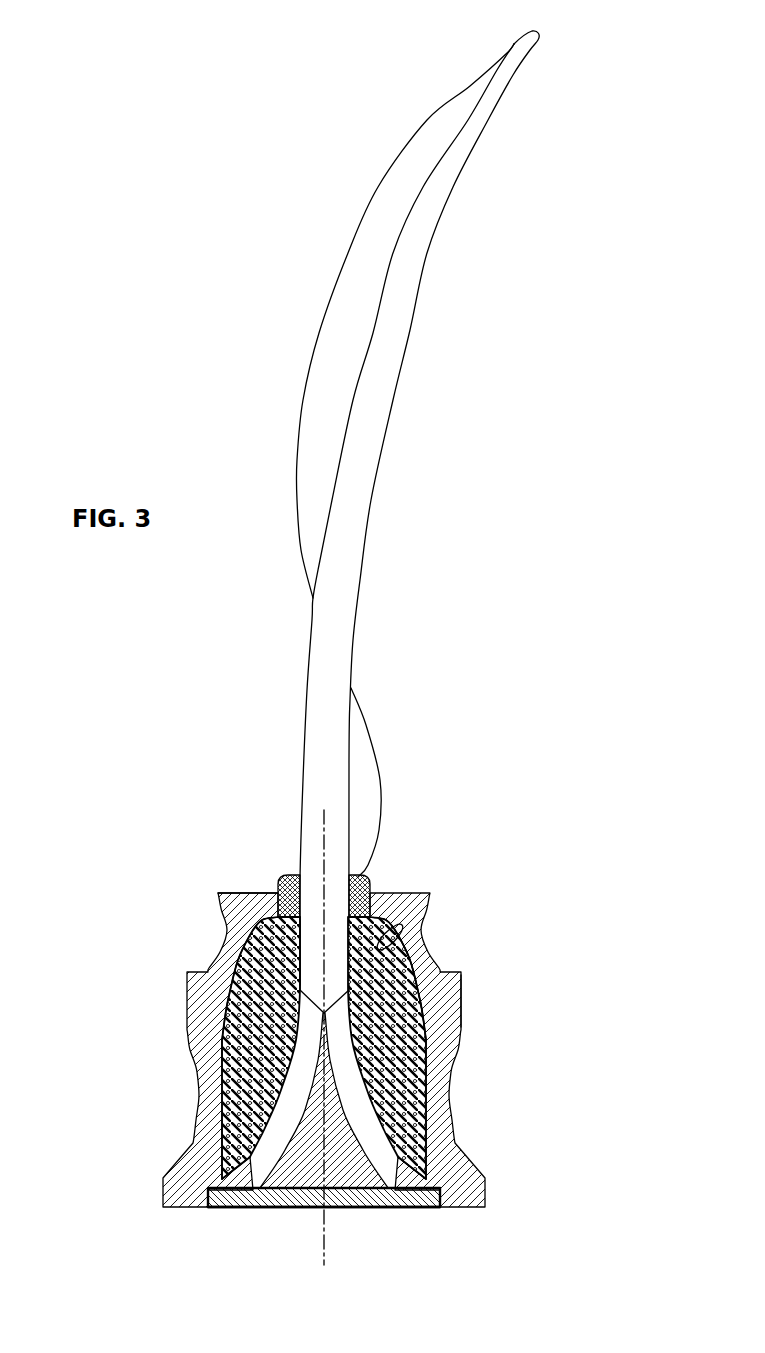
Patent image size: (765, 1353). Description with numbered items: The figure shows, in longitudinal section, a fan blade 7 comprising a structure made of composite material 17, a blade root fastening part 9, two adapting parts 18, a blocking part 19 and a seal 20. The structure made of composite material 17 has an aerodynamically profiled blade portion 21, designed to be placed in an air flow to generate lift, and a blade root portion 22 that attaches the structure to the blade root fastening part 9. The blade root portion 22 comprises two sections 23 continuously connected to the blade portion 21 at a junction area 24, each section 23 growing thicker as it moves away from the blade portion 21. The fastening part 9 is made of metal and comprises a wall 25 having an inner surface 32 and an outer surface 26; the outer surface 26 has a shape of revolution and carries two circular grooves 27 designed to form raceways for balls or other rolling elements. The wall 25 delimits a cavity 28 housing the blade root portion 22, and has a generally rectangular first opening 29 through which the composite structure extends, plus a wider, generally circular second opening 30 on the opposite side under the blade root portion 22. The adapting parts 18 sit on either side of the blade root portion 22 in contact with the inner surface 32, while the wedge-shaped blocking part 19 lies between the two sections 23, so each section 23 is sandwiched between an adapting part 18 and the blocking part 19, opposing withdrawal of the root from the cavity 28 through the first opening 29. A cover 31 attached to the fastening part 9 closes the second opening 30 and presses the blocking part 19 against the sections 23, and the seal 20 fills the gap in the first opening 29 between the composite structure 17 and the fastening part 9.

The fan blade 7 is at (192, 444).
The blade root fastening part 9 is at (327, 1029).
The structure made of composite material 17 is at (378, 510).
The adapting parts 18 is at (262, 1033).
The blocking part 19 is at (284, 1176).
The seal 20 is at (284, 878).
The aerodynamically profiled blade portion 21 is at (380, 373).
The blade root portion 22 is at (421, 987).
The sections 23 is at (250, 1160).
The junction area 24 is at (333, 958).
The wall 25 is at (451, 1003).
The outer surface 26 is at (186, 1000).
The circular grooves 27 is at (424, 932).
The cavity 28 is at (390, 930).
The first opening 29 is at (366, 882).
The second opening 30 is at (431, 1203).
The cover 31 is at (360, 1194).
The inner surface 32 is at (232, 897).